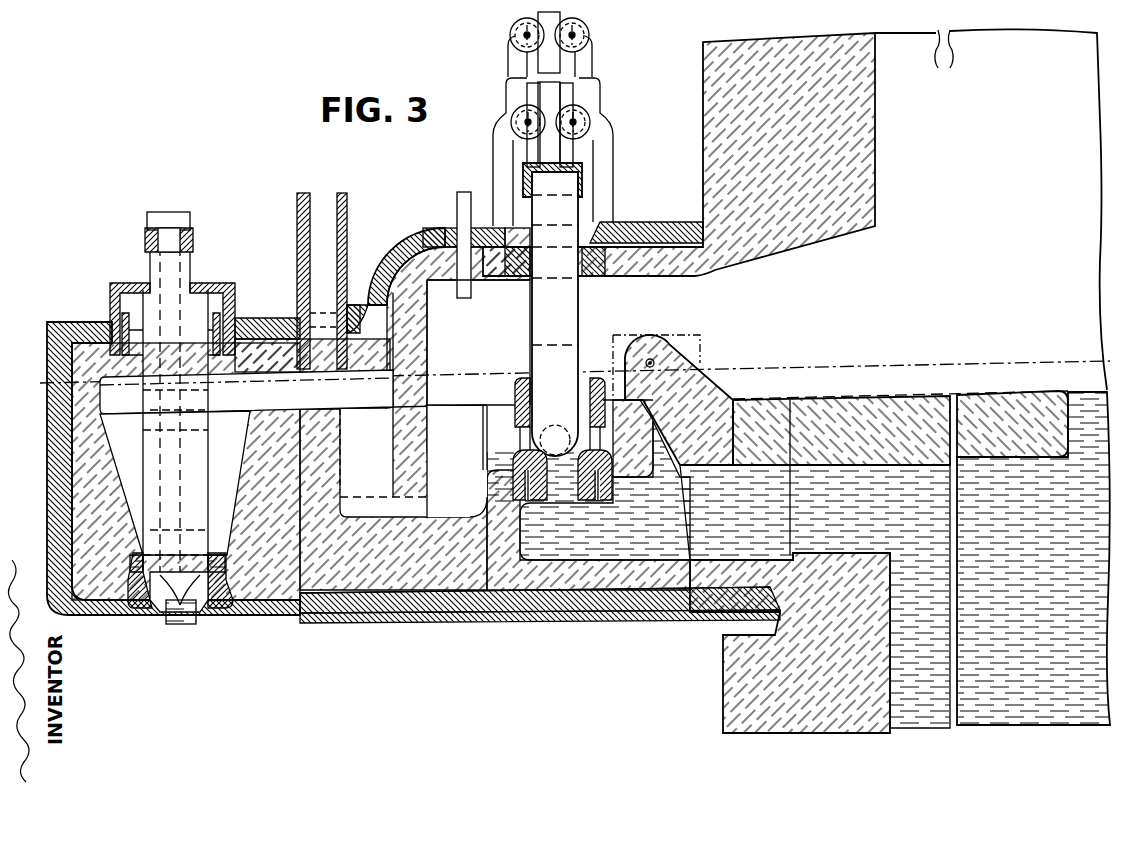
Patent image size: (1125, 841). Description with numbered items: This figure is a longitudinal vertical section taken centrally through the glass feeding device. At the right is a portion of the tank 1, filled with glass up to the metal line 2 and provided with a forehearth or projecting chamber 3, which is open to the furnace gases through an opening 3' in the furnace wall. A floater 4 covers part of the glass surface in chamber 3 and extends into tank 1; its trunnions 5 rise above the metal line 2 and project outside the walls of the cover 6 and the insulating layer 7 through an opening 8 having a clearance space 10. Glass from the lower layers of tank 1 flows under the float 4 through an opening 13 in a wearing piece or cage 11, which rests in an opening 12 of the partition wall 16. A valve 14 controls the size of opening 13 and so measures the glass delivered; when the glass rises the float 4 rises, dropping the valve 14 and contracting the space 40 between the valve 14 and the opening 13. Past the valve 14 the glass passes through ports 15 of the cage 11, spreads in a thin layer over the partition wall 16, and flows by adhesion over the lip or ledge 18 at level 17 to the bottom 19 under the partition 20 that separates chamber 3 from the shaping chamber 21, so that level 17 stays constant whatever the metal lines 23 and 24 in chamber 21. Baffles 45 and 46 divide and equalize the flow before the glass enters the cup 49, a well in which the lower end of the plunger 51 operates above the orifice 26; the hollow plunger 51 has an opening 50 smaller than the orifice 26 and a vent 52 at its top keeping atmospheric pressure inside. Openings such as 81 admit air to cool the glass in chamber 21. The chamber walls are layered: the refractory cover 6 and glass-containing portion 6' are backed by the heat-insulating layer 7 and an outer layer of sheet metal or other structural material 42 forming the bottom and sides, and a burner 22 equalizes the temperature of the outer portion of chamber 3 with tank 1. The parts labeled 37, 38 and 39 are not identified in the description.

The tank 1 is at (991, 209).
The metal line 2 is at (1080, 410).
The forehearth or projecting chamber 3 is at (575, 341).
The opening in the furnace wall 3' is at (680, 154).
The floater 4 is at (863, 400).
The trunnions 5 is at (700, 370).
The cover 6 is at (589, 272).
The glass containing portion 6' is at (742, 643).
The second layer of heat-insulating material 7 is at (660, 224).
The opening 8 is at (624, 368).
The clearance space 10 is at (650, 339).
The wearing piece 11 is at (514, 392).
The opening of partition wall 12 is at (520, 492).
The opening 13 is at (586, 490).
The valve 14 is at (502, 314).
The openings 15 is at (518, 436).
The partition wall 16 is at (633, 438).
The level 17 is at (512, 456).
The ledge 18 is at (485, 480).
The bottom 19 is at (431, 505).
The partition 20 is at (420, 424).
The chamber 21 is at (246, 392).
The burner 22 is at (458, 300).
The metal line 23 is at (372, 510).
The metal line 24 is at (354, 475).
The orifice 26 is at (198, 618).
The bushing 37 is at (583, 172).
The roller 38 is at (590, 33).
The bar 39 is at (560, 97).
The space 40 is at (557, 440).
The structural material layer 42 is at (512, 618).
The baffle 45 is at (330, 428).
The baffle 46 is at (122, 494).
The cup 49 is at (140, 612).
The opening 50 is at (173, 625).
The plunger 51 is at (208, 452).
The vent 52 is at (170, 215).
The openings 81 is at (290, 392).